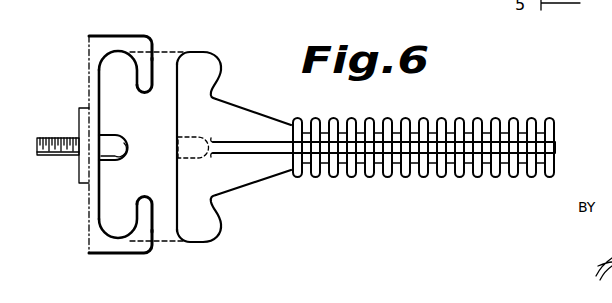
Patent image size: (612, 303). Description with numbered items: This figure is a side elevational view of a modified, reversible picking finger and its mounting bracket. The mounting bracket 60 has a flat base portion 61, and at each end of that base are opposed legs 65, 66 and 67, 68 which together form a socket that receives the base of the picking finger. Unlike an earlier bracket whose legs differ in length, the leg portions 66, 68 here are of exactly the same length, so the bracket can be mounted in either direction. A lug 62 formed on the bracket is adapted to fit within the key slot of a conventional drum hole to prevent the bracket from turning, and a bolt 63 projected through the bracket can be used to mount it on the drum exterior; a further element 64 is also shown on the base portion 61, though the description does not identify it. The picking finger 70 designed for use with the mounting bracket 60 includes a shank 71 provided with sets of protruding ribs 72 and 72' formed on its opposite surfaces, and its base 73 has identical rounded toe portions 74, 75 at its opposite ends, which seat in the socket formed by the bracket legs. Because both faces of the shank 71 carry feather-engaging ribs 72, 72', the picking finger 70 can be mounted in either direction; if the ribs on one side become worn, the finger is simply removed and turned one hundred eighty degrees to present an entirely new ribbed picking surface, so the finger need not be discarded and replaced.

The mounting bracket 60 is at (97, 26).
The flat base portion 61 is at (89, 76).
The lug 62 is at (82, 182).
The bolt 63 is at (50, 143).
The boss 64 is at (120, 142).
The leg 65 is at (121, 42).
The leg 66 is at (143, 72).
The leg 67 is at (130, 254).
The leg 68 is at (148, 215).
The picking finger 70 is at (468, 88).
The shank 71 is at (528, 128).
The protruding ribs 72 is at (423, 117).
The protruding ribs 72' is at (423, 182).
The base 73 is at (205, 118).
The rounded toe portion 74 is at (210, 66).
The rounded toe portion 75 is at (207, 228).